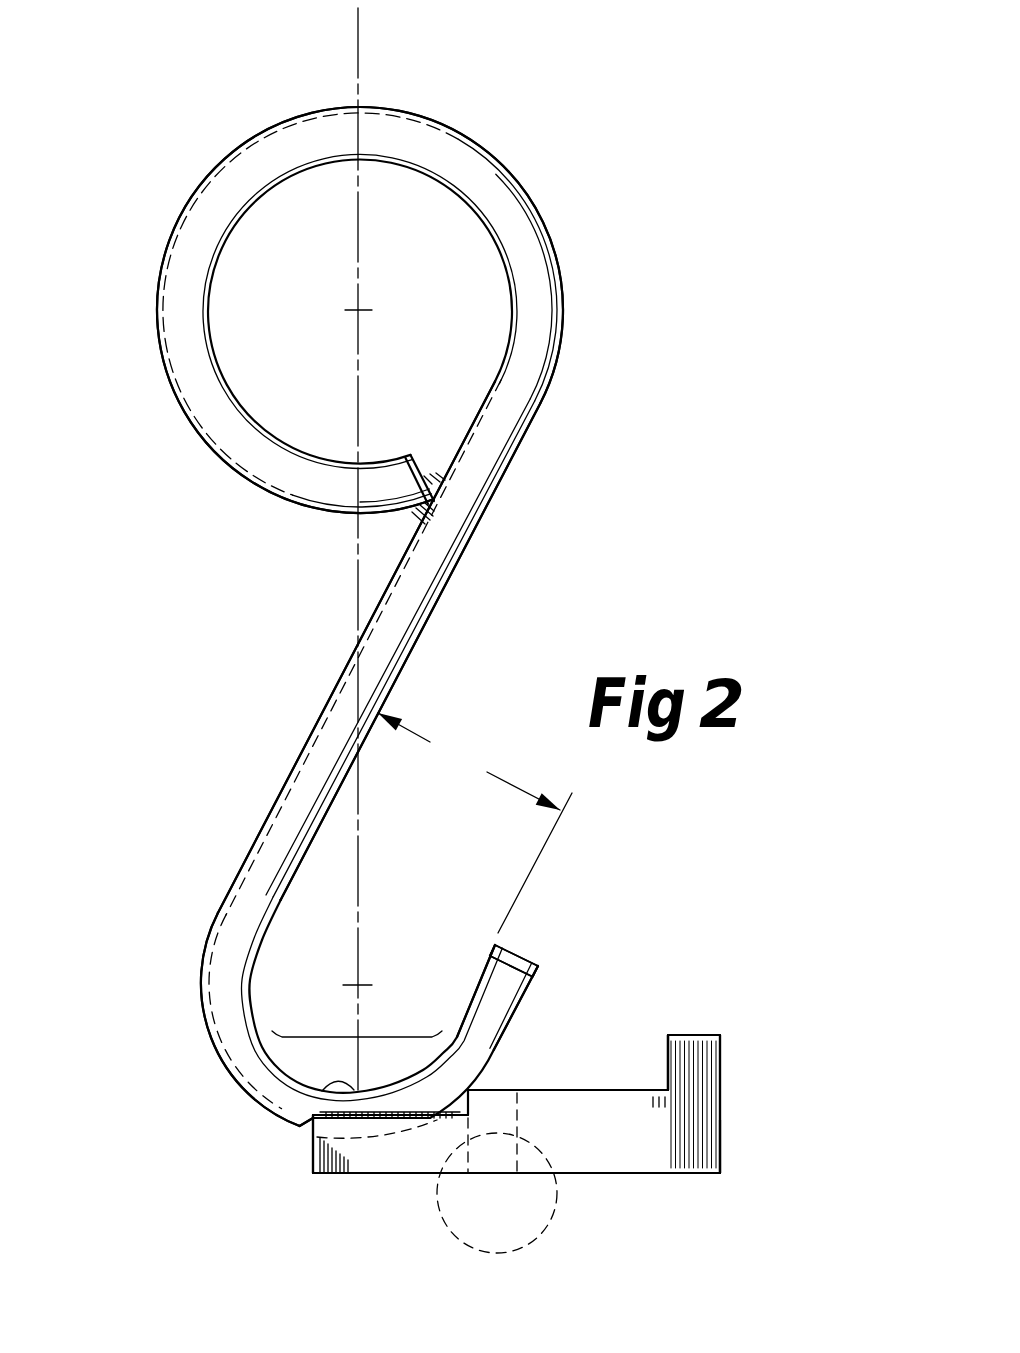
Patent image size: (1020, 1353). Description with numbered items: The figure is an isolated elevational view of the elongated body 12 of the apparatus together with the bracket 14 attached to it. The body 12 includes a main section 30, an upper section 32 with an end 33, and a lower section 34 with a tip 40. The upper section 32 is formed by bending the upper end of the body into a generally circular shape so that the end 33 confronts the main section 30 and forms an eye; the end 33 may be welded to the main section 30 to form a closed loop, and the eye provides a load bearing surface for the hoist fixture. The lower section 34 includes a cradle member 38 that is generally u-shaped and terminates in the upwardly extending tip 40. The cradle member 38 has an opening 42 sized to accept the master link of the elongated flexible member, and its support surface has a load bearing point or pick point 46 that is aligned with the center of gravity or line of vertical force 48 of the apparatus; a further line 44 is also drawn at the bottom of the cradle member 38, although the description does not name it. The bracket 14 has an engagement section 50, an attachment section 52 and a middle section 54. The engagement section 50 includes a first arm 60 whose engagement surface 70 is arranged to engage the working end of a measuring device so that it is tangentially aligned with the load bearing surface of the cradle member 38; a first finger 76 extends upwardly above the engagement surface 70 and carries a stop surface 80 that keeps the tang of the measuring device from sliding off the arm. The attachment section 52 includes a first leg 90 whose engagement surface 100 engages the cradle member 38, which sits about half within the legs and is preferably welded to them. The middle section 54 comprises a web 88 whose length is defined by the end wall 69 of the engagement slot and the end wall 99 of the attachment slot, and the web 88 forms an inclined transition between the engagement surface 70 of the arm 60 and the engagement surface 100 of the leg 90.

The elongated body 12 is at (220, 108).
The line of vertical force 48 is at (362, 43).
The upper section 32 is at (524, 162).
The end 33 is at (437, 480).
The main section 30 is at (292, 716).
The opening 42 is at (475, 823).
The tip 40 is at (522, 952).
The bottom surface line 44 is at (372, 1037).
The bracket 14 is at (700, 998).
The stop surface 80 is at (666, 1053).
The first finger 76 is at (712, 1037).
The engagement surface 70 is at (594, 1090).
The lower section 34 is at (214, 1102).
The cradle member 38 is at (268, 1112).
The pick point 46 is at (325, 1082).
The first leg 90 is at (352, 1170).
The attachment section 52 is at (290, 1200).
The engagement surface 100 is at (467, 1102).
The end wall 99 is at (437, 1176).
The web 88 is at (478, 1188).
The middle section 54 is at (504, 1200).
The end wall 69 is at (500, 1193).
The first arm 60 is at (632, 1152).
The engagement section 50 is at (728, 1200).